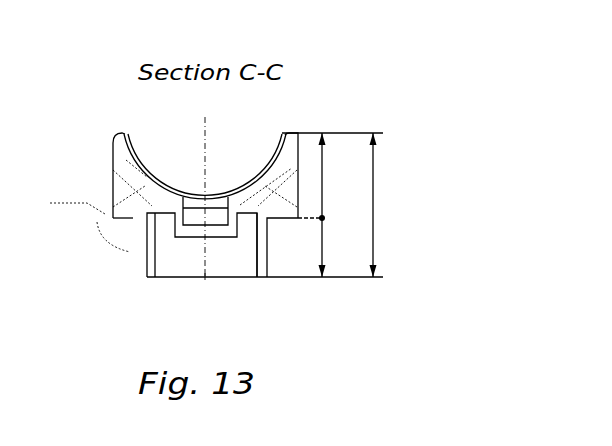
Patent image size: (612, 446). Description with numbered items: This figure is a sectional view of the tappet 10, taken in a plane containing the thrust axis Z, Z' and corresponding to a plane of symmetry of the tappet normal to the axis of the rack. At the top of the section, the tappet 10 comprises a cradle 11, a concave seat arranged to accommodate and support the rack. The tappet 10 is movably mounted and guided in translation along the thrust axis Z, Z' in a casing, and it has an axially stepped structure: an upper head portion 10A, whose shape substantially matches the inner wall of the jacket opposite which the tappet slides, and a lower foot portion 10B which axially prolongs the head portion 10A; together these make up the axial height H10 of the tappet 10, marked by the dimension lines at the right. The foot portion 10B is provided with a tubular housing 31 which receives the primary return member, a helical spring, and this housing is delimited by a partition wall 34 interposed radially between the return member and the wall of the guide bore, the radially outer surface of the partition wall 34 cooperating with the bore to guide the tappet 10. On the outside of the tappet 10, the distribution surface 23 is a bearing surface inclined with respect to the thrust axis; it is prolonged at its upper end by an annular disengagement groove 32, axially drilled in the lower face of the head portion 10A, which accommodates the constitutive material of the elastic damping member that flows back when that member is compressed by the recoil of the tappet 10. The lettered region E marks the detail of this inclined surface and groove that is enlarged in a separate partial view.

The tappet 10 is at (98, 158).
The cradle 11 is at (142, 152).
The distribution surface 23 is at (270, 219).
The tubular housing 31 is at (180, 250).
The annular disengagement groove 32 is at (127, 220).
The partition wall 34 is at (268, 247).
The head portion 10A is at (322, 175).
The foot portion 10B is at (322, 240).
The axial height H10 is at (373, 207).
The detail E is at (90, 215).
The thrust axis Z is at (217, 291).
The thrust axis Z' is at (217, 193).